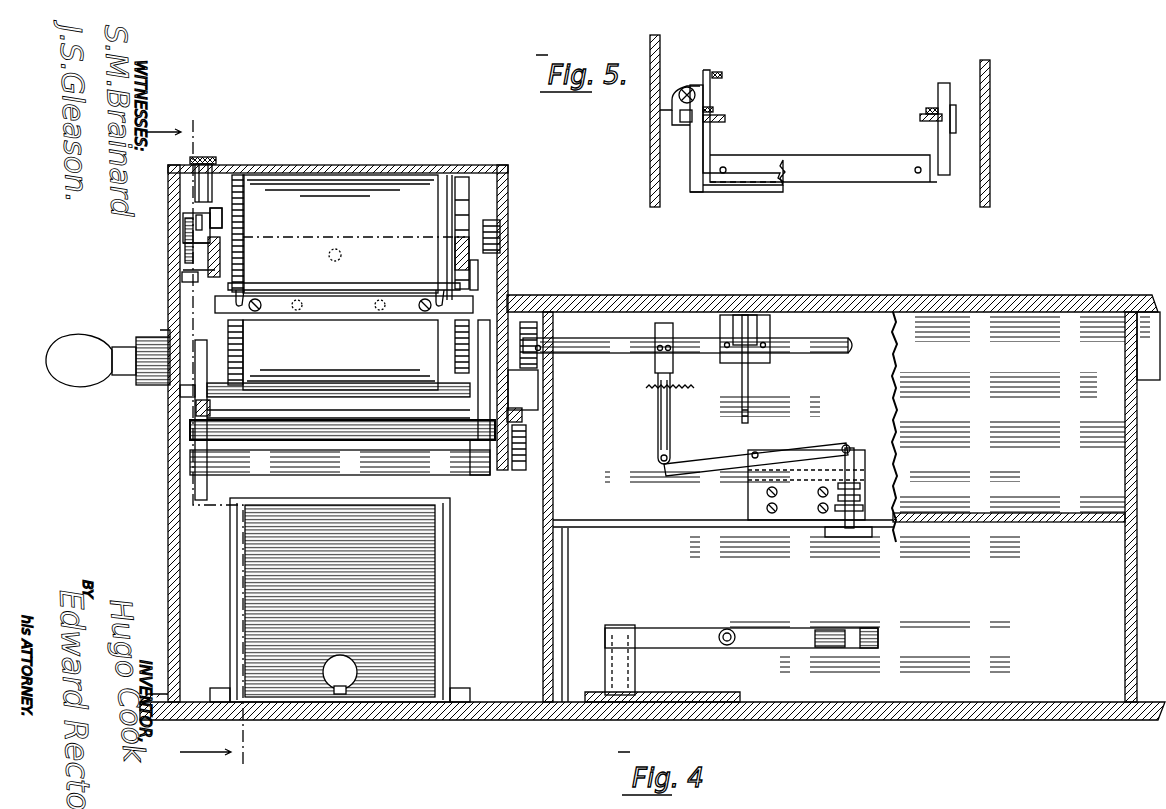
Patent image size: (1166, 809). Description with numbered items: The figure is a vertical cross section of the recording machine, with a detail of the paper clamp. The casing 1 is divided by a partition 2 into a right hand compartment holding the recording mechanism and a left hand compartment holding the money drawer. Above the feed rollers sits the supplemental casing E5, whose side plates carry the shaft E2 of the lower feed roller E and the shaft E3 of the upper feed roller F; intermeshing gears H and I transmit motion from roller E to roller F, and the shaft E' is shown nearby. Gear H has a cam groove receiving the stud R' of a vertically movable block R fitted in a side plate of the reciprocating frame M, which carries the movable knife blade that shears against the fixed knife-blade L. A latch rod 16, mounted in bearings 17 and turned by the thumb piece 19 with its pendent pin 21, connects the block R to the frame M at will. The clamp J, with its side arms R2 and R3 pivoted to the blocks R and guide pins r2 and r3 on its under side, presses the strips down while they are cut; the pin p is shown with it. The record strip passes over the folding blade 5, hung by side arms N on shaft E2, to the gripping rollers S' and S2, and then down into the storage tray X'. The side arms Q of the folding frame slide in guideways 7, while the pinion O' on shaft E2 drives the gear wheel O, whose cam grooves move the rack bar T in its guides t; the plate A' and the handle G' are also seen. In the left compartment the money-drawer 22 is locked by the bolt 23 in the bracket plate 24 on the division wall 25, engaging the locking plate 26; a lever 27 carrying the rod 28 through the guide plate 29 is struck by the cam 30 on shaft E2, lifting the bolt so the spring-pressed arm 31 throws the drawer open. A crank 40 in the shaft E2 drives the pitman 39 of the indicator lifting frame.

In FIG. 4, the casing 1 is at (684, 285).
In FIG. 4, the partition 2 is at (553, 497).
In FIG. 4, the folding blade 5 is at (357, 437).
In FIG. 4, the guideways 7 is at (180, 396).
In FIG. 5, the vertical rod 16 is at (685, 88).
In FIG. 4, the vertical rod 16 is at (190, 222).
In FIG. 5, the bearings 17 is at (680, 100).
In FIG. 4, the bearings 17 is at (215, 208).
In FIG. 4, the sliding thumb piece 19 is at (208, 160).
In FIG. 5, the pendent pin 21 is at (690, 86).
In FIG. 4, the money-drawer 22 is at (661, 572).
In FIG. 4, the bolt 23 is at (852, 470).
In FIG. 4, the bracket plate 24 is at (806, 485).
In FIG. 4, the division wall 25 is at (651, 512).
In FIG. 4, the locking plate 26 is at (836, 538).
In FIG. 4, the lever 27 is at (697, 456).
In FIG. 4, the vertical rod 28 is at (660, 405).
In FIG. 4, the guide plate 29 is at (648, 388).
In FIG. 4, the cam 30 is at (670, 336).
In FIG. 4, the spring-pressed pivoted arm 31 is at (694, 637).
In FIG. 4, the pitman 39 is at (759, 369).
In FIG. 4, the crank 40 is at (750, 333).
In FIG. 4, the gear H is at (238, 175).
In FIG. 4, the feed roller F is at (354, 234).
In FIG. 4, the feed roller E is at (340, 355).
In FIG. 4, the roller shaft E' is at (359, 237).
In FIG. 4, the shaft E2 is at (578, 346).
In FIG. 4, the shaft E3 is at (482, 230).
In FIG. 4, the supplemental casing E5 is at (416, 166).
In FIG. 5, the clamping plate J is at (825, 162).
In FIG. 4, the clamping plate J is at (380, 284).
In FIG. 4, the knife-blade L is at (344, 306).
In FIG. 5, the frame M is at (690, 155).
In FIG. 4, the frame M is at (224, 216).
In FIG. 5, the block R is at (818, 109).
In FIG. 4, the block R is at (318, 274).
In FIG. 5, the stud R' is at (822, 105).
In FIG. 4, the stud R' is at (338, 257).
In FIG. 5, the side arm R2 is at (713, 110).
In FIG. 5, the side arm R3 is at (932, 108).
In FIG. 5, the guide-pin r2 is at (723, 173).
In FIG. 4, the guide-pin r2 is at (240, 294).
In FIG. 5, the guide-pin r3 is at (918, 173).
In FIG. 4, the guide-pin r3 is at (440, 294).
In FIG. 5, the pin p is at (722, 75).
In FIG. 4, the handle G' is at (108, 347).
In FIG. 4, the side arms N is at (200, 407).
In FIG. 4, the gear I is at (241, 354).
In FIG. 4, the side arms Q is at (242, 383).
In FIG. 4, the frame plate A' is at (483, 380).
In FIG. 4, the gripping roller S2 is at (452, 432).
In FIG. 4, the gripping roller S' is at (478, 466).
In FIG. 4, the pinion O' is at (544, 320).
In FIG. 4, the gear wheel O is at (544, 447).
In FIG. 4, the rack bar T is at (522, 428).
In FIG. 4, the guides t is at (540, 385).
In FIG. 4, the storage tray X' is at (342, 600).